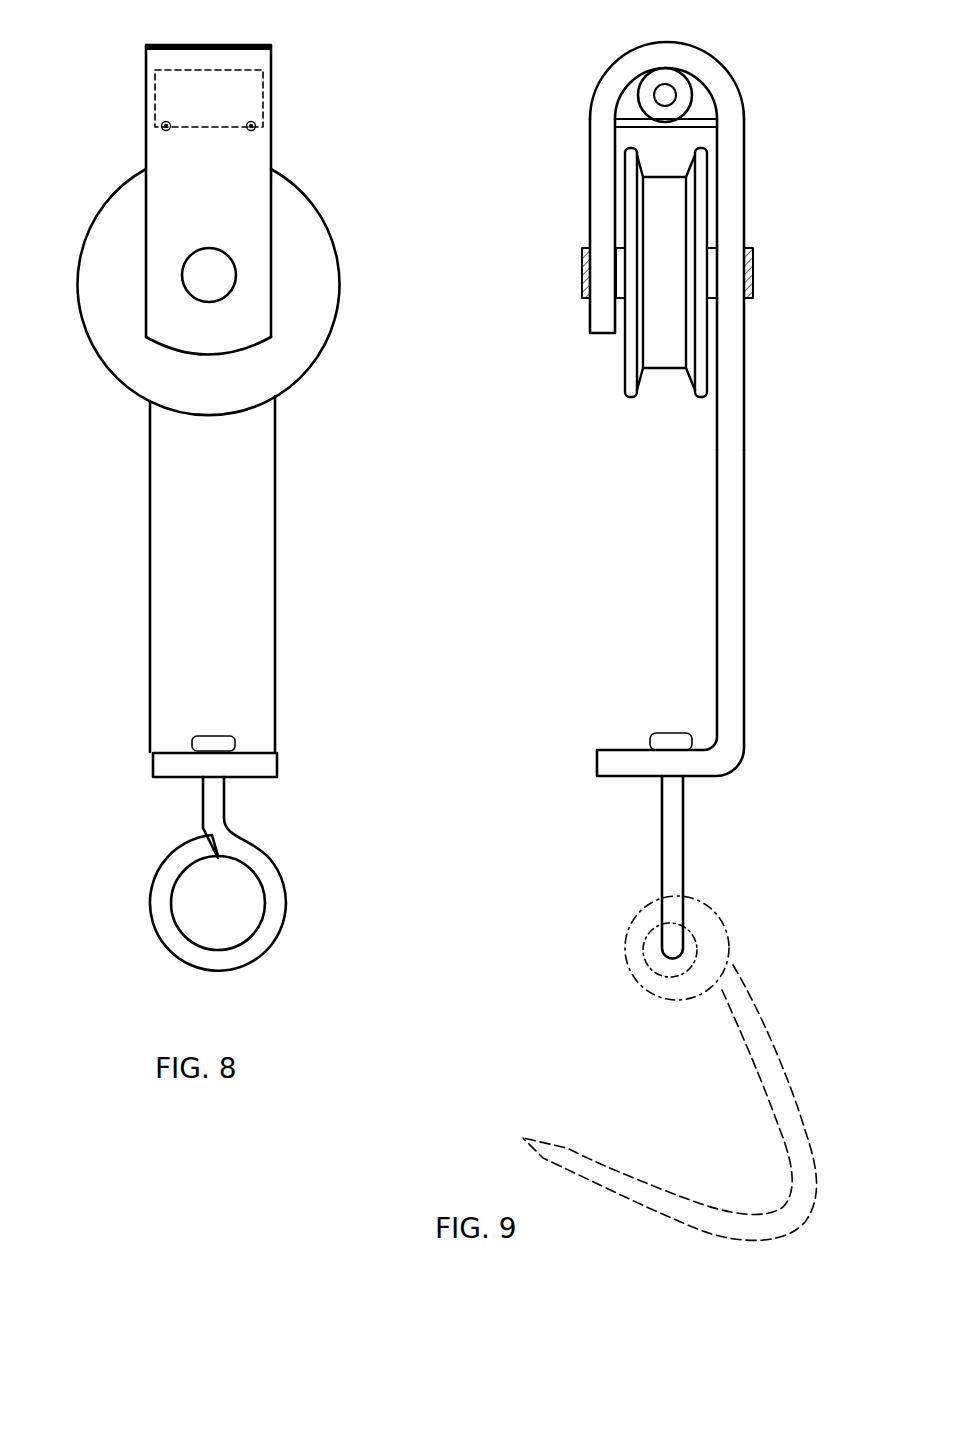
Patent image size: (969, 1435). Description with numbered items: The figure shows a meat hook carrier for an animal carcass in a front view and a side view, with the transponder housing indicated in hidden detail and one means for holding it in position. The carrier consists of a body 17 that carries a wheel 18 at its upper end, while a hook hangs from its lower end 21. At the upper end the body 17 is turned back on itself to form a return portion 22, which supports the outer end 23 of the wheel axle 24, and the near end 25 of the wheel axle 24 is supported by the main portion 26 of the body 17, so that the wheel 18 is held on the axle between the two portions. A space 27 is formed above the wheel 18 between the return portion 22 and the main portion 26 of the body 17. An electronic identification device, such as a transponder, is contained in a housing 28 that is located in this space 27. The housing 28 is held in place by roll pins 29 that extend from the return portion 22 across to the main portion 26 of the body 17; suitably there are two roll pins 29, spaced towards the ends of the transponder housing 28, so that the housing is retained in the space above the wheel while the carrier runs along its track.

In FIG. 8, the body 17 is at (274, 500).
In FIG. 9, the body 17 is at (718, 503).
In FIG. 8, the wheel 18 is at (302, 243).
In FIG. 9, the wheel 18 is at (630, 388).
In FIG. 8, the lower end 21 is at (277, 766).
In FIG. 9, the lower end 21 is at (602, 762).
In FIG. 8, the return portion 22 is at (208, 199).
In FIG. 9, the return portion 22 is at (590, 150).
In FIG. 9, the outer end 23 is at (585, 272).
In FIG. 8, the wheel axle 24 is at (232, 278).
In FIG. 9, the wheel axle 24 is at (622, 338).
In FIG. 9, the near end 25 is at (753, 282).
In FIG. 9, the main portion 26 is at (745, 186).
In FIG. 9, the space 27 is at (627, 102).
In FIG. 8, the housing 28 is at (263, 82).
In FIG. 9, the housing 28 is at (692, 96).
In FIG. 8, the roll pins 29 is at (166, 128).